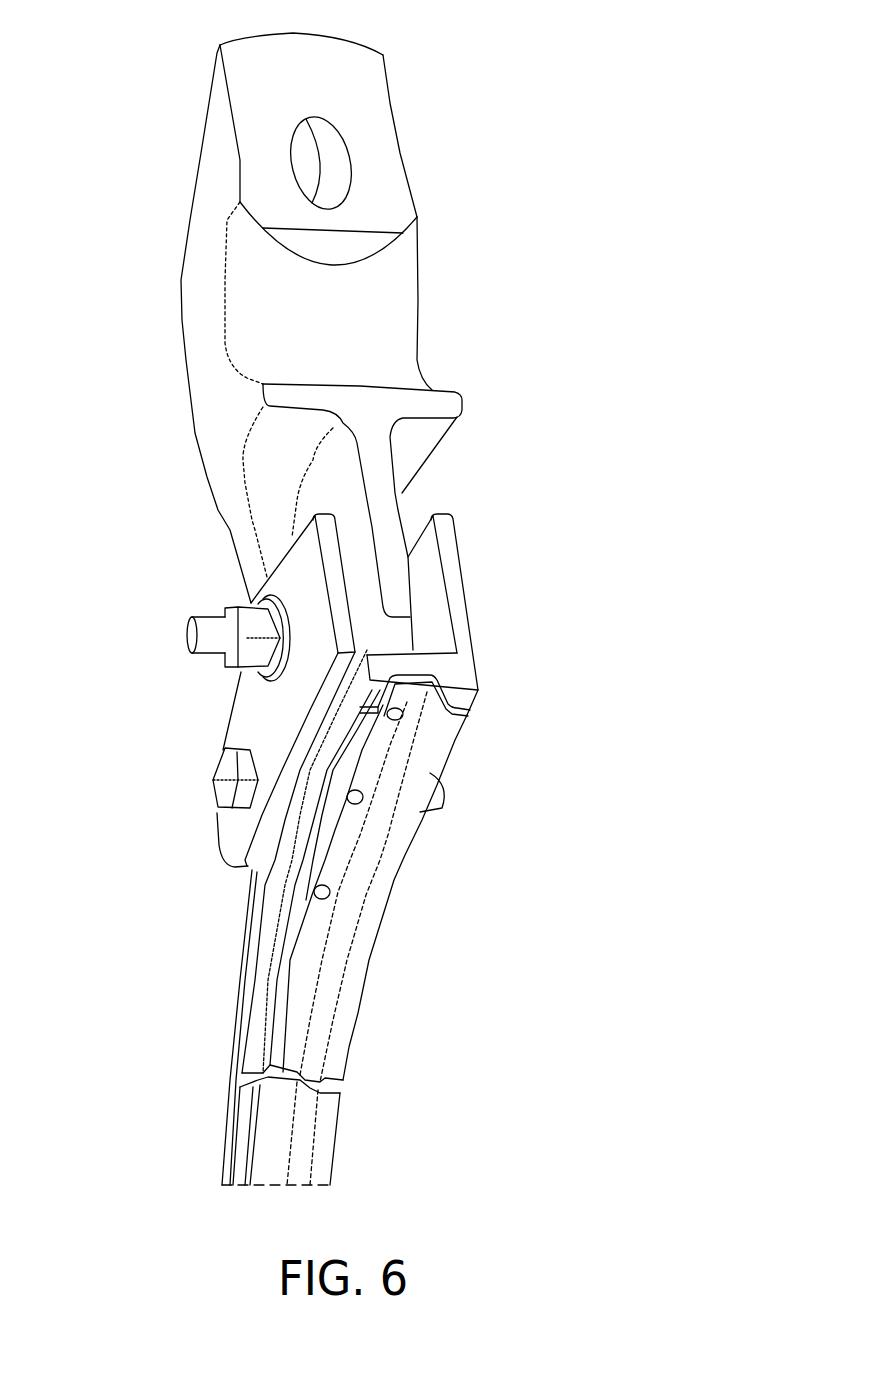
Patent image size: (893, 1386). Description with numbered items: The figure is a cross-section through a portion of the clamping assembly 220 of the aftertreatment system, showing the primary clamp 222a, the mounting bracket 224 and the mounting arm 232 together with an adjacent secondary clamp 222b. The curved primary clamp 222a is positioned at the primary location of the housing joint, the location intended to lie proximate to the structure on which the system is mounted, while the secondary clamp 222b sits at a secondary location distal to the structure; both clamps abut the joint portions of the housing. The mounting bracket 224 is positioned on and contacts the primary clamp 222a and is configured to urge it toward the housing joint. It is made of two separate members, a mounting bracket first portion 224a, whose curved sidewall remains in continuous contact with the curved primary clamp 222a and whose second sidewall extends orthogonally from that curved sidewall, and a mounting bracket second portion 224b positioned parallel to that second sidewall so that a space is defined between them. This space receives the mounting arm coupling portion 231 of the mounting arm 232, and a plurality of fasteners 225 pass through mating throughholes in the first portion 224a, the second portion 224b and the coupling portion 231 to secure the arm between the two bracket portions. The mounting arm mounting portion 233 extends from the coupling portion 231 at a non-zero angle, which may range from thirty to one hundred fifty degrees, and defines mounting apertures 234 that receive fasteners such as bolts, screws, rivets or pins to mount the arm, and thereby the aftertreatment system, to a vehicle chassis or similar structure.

The clamping assembly 220 is at (616, 147).
The primary clamp 222a is at (332, 995).
The secondary clamp 222b is at (302, 1140).
The mounting bracket 224 is at (467, 580).
The mounting bracket first portion 224a is at (452, 615).
The mounting bracket second portion 224b is at (243, 700).
The fastener 225 is at (203, 636).
The mounting arm coupling portion 231 is at (383, 497).
The mounting arm 232 is at (367, 305).
The mounting arm mounting portion 233 is at (385, 210).
The mounting aperture 234 is at (303, 158).